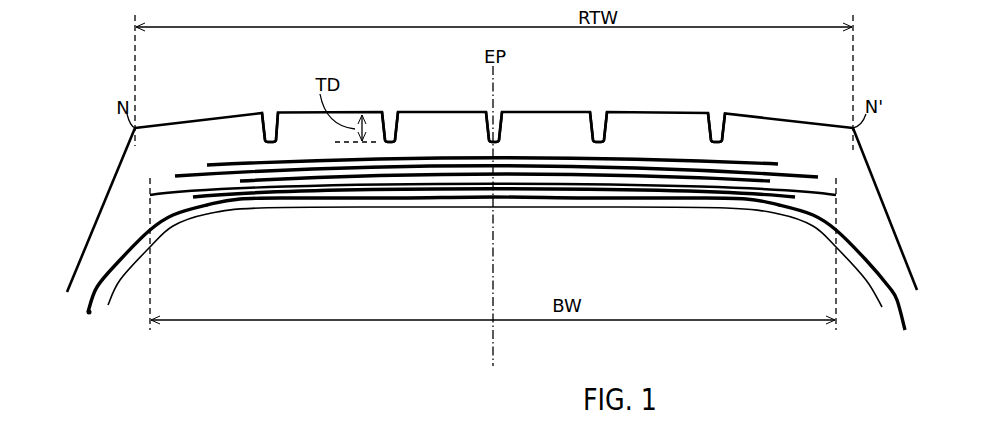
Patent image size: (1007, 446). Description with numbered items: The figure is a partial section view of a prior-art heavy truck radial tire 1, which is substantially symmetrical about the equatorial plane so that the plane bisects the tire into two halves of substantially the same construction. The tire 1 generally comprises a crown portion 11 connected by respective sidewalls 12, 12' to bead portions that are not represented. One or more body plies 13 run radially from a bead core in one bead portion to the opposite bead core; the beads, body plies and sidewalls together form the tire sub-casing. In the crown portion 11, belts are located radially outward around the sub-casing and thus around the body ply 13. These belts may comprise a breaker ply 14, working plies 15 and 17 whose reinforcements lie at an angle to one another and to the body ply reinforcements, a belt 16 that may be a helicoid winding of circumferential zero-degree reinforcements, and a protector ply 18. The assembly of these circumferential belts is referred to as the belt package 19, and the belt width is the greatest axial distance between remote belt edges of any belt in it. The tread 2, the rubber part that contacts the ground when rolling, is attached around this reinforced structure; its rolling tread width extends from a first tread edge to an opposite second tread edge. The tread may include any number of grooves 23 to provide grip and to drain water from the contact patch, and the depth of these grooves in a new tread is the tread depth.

The heavy truck radial tire 1 is at (66, 105).
The tread 2 is at (163, 145).
The crown portion 11 is at (96, 169).
The sidewall 12 is at (83, 210).
The sidewall 12' is at (902, 209).
The body ply 13 is at (93, 313).
The breaker ply 14 is at (217, 202).
The working ply 15 is at (170, 193).
The belt with circumferential reinforcements 16 is at (245, 181).
The working ply 17 is at (282, 173).
The protector ply 18 is at (318, 164).
The belt package 19 is at (365, 238).
The groove 23 is at (273, 109).